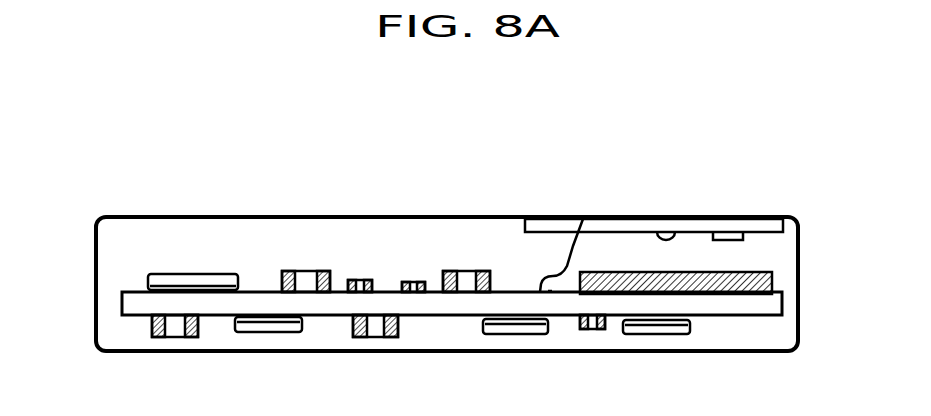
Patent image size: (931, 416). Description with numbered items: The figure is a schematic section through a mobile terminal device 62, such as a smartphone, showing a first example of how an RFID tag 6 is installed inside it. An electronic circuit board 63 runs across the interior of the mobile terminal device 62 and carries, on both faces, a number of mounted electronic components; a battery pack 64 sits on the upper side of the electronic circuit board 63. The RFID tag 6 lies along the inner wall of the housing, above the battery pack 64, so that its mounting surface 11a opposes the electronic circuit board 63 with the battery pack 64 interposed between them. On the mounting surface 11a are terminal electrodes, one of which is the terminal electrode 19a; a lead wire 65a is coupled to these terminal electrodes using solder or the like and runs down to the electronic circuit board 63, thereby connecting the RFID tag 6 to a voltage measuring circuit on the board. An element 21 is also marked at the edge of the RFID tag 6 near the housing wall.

The mobile terminal device 62 is at (85, 227).
The electronic circuit board 63 is at (778, 325).
The RFID tag 6 is at (523, 226).
The terminal electrode 19a is at (587, 217).
The mounting surface 11a is at (677, 233).
The terminal 21 is at (743, 239).
The battery pack 64 is at (773, 287).
The lead wire 65a is at (557, 276).